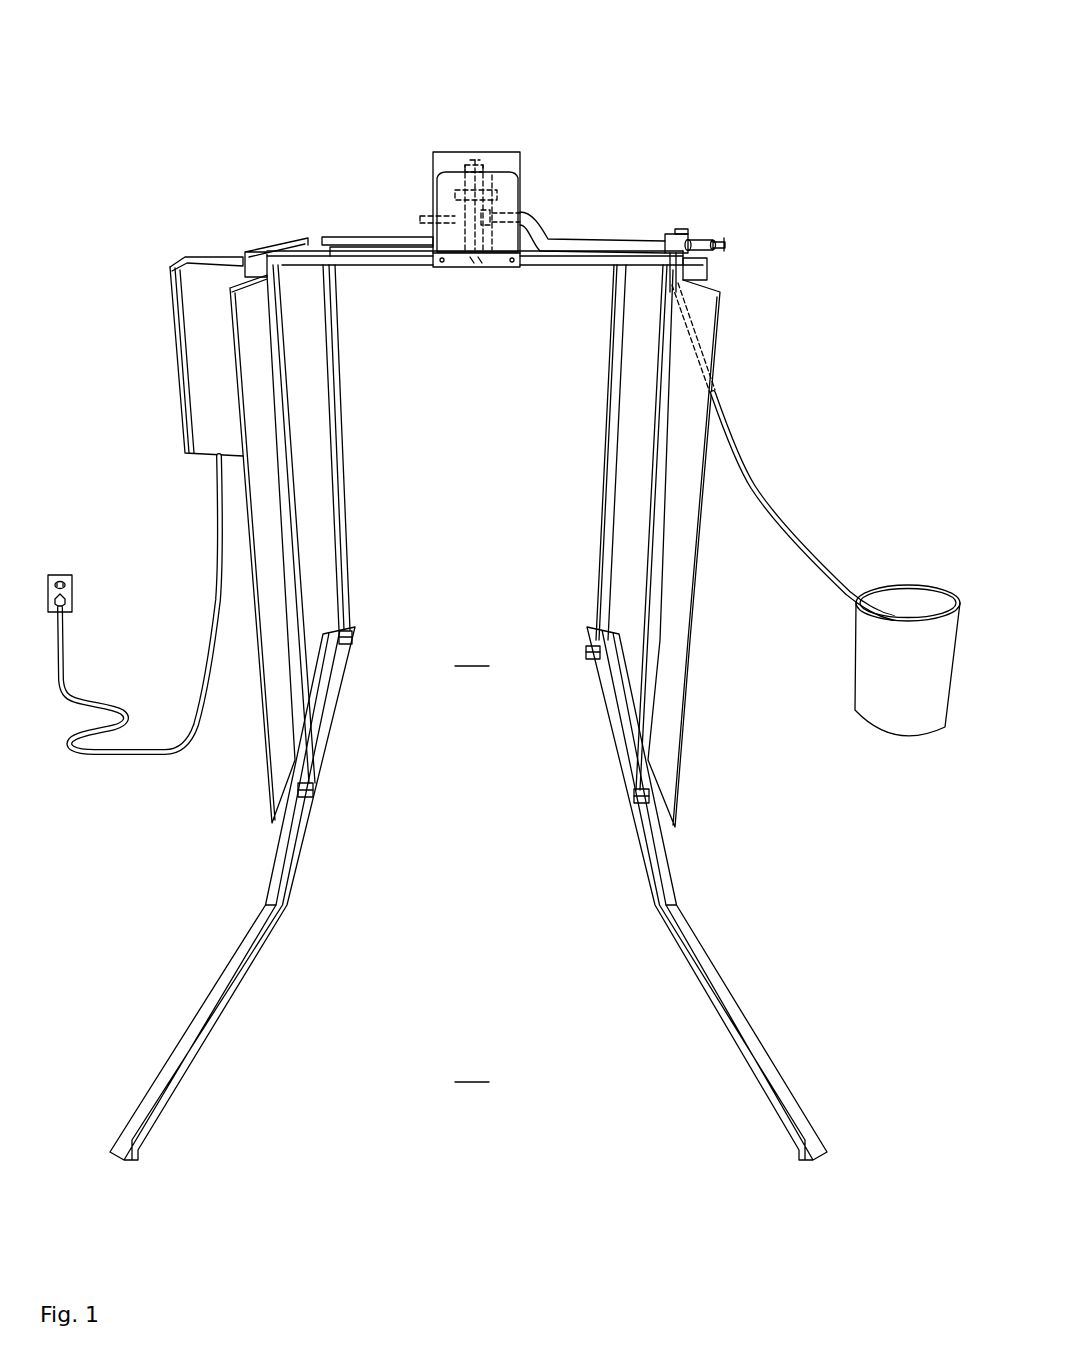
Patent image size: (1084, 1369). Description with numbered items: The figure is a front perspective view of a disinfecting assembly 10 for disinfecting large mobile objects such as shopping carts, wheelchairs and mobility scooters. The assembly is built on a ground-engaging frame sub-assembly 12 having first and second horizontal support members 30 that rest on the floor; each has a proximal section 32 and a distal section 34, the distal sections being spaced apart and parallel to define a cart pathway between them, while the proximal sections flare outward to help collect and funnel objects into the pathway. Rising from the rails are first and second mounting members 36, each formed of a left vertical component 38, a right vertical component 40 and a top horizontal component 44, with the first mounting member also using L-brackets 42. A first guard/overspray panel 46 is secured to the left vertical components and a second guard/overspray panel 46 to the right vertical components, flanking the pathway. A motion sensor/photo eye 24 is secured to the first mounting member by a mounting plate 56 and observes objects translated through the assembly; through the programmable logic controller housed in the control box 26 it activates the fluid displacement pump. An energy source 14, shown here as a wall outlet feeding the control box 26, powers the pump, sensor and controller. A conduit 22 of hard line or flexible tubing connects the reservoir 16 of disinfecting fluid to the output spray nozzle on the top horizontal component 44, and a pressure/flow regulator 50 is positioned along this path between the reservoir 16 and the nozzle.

The disinfecting assembly 10 is at (858, 84).
The ground-engaging frame sub-assembly 12 is at (692, 906).
The energy source 14 is at (61, 548).
The reservoir 16 is at (902, 700).
The conduit 22 is at (570, 246).
The motion sensor/photo eye 24 is at (491, 200).
The control box 26 is at (200, 291).
The horizontal support member 30 is at (345, 709).
The proximal section 32 is at (472, 1068).
The distal section 34 is at (472, 652).
The mounting member 36 is at (352, 641).
The left vertical component 38 is at (328, 321).
The right vertical component 40 is at (615, 323).
The L-bracket 42 is at (257, 255).
The top horizontal component 44 is at (323, 256).
The guard/overspray panel 46 is at (268, 800).
The pressure/flow regulator 50 is at (703, 238).
The mounting plate 56 is at (475, 165).